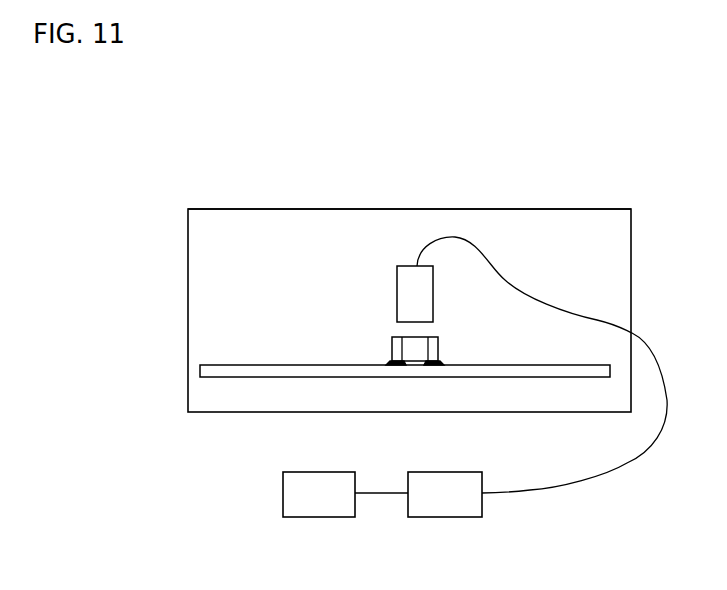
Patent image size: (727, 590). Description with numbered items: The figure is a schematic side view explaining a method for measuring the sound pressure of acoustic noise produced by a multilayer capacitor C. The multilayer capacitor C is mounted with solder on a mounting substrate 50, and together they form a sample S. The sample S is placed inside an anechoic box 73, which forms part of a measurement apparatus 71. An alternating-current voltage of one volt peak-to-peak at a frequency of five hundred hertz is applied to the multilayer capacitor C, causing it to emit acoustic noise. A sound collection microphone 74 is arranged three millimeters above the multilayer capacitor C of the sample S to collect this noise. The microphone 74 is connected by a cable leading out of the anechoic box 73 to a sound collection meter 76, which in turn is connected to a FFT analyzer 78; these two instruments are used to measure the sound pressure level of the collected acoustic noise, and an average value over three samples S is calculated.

The measurement apparatus 71 is at (341, 198).
The anechoic box 73 is at (500, 207).
The sound collection microphone 74 is at (397, 293).
The mounting substrate 50 is at (294, 364).
The sample S is at (241, 336).
The multilayer capacitor C is at (445, 350).
The sound collection meter 76 is at (446, 518).
The FFT analyzer 78 is at (322, 518).